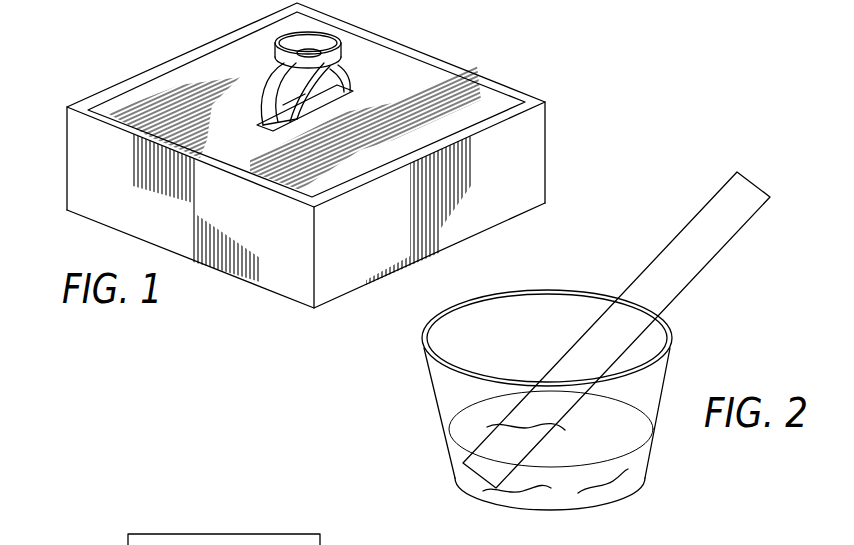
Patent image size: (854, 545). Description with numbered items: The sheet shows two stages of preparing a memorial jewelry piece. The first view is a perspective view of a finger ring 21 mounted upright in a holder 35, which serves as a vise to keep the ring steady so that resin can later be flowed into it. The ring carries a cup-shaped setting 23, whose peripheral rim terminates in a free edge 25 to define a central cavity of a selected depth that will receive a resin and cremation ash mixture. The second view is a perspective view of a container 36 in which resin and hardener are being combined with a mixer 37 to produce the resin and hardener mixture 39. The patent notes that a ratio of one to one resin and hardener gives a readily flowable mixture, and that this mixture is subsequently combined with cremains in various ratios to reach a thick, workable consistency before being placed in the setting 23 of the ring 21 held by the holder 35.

In FIG. 1, the finger ring 21 is at (355, 65).
In FIG. 1, the setting 23 is at (318, 34).
In FIG. 1, the free edge 25 is at (266, 52).
In FIG. 1, the holder 35 is at (523, 143).
In FIG. 2, the container 36 is at (437, 398).
In FIG. 2, the mixer 37 is at (710, 238).
In FIG. 2, the resin and hardener mixture 39 is at (617, 478).